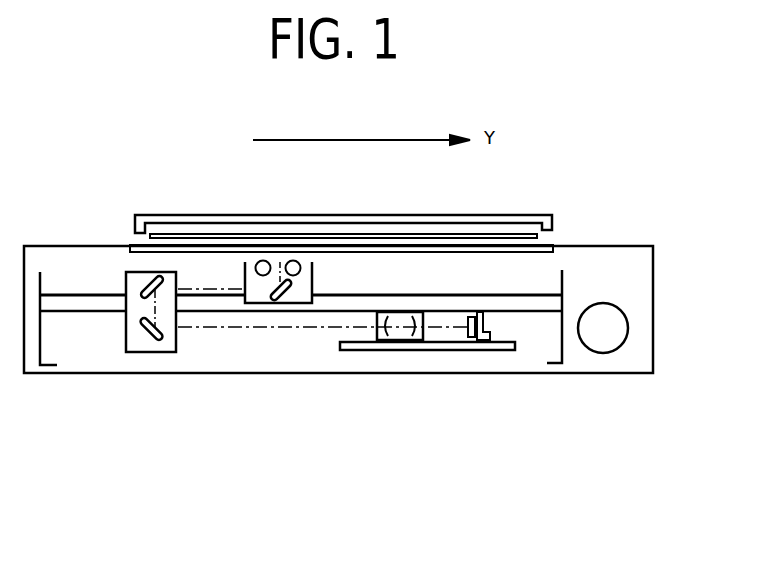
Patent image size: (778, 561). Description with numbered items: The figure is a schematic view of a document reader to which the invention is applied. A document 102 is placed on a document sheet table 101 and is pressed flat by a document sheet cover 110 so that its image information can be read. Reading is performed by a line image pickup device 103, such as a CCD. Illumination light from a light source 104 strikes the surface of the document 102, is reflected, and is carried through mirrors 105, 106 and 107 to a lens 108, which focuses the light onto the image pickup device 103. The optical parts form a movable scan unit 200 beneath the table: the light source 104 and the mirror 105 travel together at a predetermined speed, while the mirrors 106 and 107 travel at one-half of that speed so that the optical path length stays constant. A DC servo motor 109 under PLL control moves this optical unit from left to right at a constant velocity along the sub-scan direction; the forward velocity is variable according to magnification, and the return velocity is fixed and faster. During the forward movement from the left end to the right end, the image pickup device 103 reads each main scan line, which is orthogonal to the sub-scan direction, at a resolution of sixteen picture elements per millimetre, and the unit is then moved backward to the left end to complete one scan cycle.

The document sheet table 101 is at (550, 247).
The document 102 is at (540, 237).
The document sheet cover 110 is at (513, 215).
The line image pickup device 103 is at (474, 337).
The light source 104 is at (290, 259).
The mirror 105 is at (290, 297).
The mirror 106 is at (145, 280).
The mirror 107 is at (149, 334).
The lens 108 is at (400, 344).
The DC servo motor 109 is at (602, 338).
The scan unit 200 is at (202, 295).